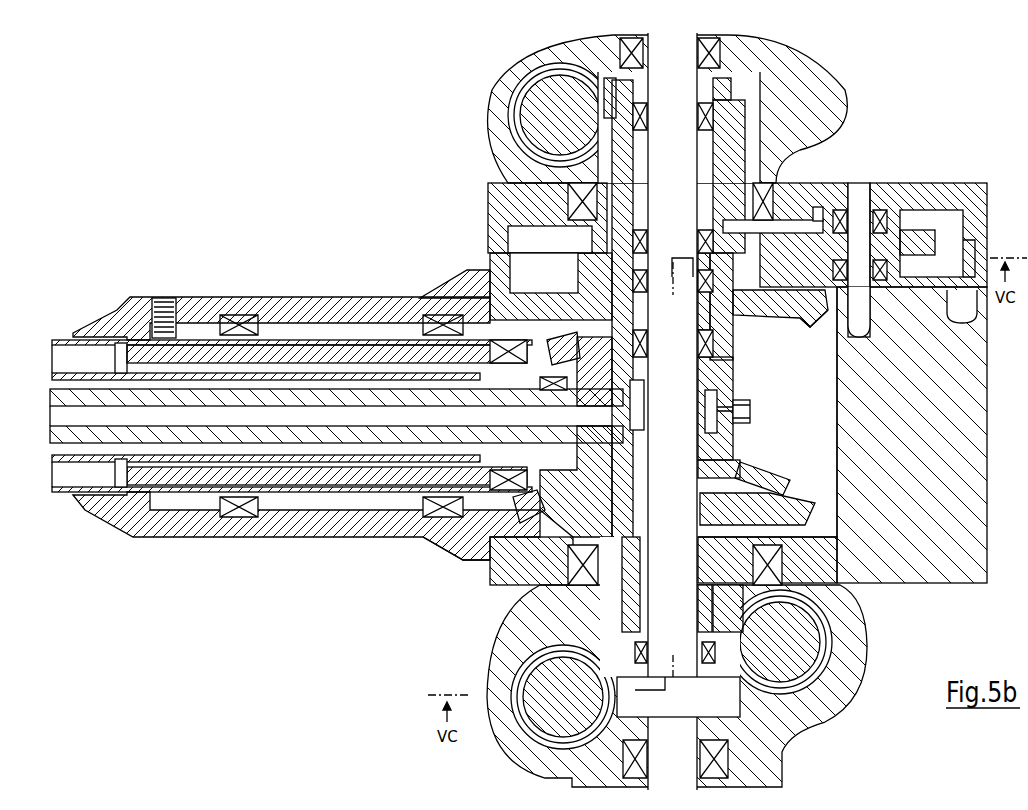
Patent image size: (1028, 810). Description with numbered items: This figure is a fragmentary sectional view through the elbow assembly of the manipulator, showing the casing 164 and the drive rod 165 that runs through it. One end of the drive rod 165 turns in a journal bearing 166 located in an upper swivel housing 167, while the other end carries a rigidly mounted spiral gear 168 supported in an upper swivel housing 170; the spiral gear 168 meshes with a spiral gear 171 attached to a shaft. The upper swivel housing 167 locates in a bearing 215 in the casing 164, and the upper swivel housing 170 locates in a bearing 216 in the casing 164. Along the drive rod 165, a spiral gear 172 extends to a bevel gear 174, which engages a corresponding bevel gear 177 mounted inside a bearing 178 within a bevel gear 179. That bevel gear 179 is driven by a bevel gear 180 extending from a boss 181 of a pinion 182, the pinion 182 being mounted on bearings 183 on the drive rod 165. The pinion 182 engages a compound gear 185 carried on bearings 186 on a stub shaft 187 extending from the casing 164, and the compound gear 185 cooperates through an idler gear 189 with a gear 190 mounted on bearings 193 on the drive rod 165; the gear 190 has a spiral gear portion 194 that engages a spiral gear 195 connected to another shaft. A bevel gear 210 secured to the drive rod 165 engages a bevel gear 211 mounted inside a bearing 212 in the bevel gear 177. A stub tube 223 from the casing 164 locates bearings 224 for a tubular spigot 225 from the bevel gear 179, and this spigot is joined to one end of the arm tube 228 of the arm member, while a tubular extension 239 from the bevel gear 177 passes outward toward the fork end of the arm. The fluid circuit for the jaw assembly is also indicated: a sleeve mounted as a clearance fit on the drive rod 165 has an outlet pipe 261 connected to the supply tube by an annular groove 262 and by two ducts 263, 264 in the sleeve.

The casing 164 is at (547, 220).
The drive rod 165 is at (782, 755).
The journal bearing 166 is at (697, 47).
The upper swivel housing 167 is at (840, 48).
The spiral gear 168 is at (723, 697).
The upper swivel housing 170 is at (858, 606).
The spiral gear 171 is at (540, 715).
The spiral gear 172 is at (830, 650).
The bevel gear 174 is at (770, 490).
The bevel gear 177 is at (500, 570).
The bearing 178 is at (420, 540).
The bevel gear 179 is at (462, 556).
The bevel gear 180 is at (551, 286).
The boss 181 is at (726, 331).
The pinion 182 is at (672, 262).
The bearings 183 is at (698, 288).
The compound gear 185 is at (975, 300).
The bearings 186 is at (792, 328).
The stub shaft 187 is at (850, 340).
The idler gear 189 is at (790, 240).
The gear 190 is at (698, 242).
The bearings 193 is at (700, 116).
The spiral gear portion 194 is at (632, 100).
The spiral gear 195 is at (500, 108).
The bevel gear 210 is at (752, 480).
The bevel gear 211 is at (638, 472).
The bearing 212 is at (527, 500).
The bearing 215 is at (576, 220).
The bearing 216 is at (768, 545).
The stub tube 223 is at (325, 298).
The bearings 224 is at (238, 315).
The tubular spigot 225 is at (285, 490).
The arm tube 228 is at (70, 496).
The tubular extension 239 is at (72, 342).
The outlet pipe 261 is at (738, 428).
The annular groove 262 is at (702, 400).
The duct 263 is at (705, 410).
The duct 264 is at (597, 346).